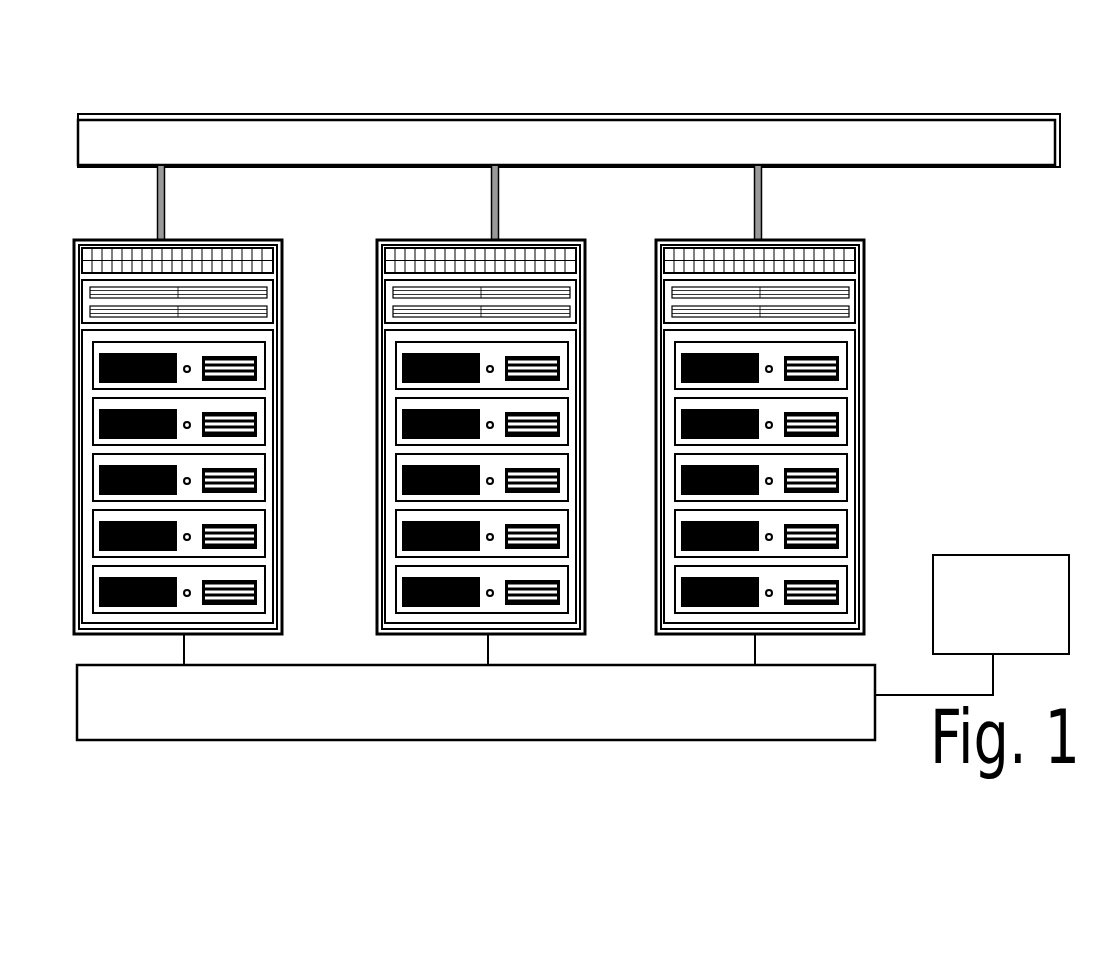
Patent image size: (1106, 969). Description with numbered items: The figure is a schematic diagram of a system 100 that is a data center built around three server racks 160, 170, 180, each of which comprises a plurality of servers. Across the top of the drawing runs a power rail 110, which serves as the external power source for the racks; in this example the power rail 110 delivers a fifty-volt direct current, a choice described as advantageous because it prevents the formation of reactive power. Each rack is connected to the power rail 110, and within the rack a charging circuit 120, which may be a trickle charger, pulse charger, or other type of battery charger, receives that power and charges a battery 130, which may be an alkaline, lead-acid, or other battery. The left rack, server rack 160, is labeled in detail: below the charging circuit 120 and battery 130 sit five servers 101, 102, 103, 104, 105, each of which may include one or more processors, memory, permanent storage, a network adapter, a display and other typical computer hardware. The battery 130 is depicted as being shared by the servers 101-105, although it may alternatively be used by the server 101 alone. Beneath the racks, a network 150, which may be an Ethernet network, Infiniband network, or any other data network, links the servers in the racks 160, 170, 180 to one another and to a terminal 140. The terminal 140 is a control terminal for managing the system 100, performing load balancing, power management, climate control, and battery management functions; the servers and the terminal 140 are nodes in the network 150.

The system 100 is at (1037, 263).
The power rail 110 is at (138, 115).
The charging circuit 120 is at (273, 263).
The battery 130 is at (273, 308).
The server 101 is at (267, 367).
The server 102 is at (267, 425).
The server 103 is at (267, 478).
The server 104 is at (267, 535).
The server 105 is at (267, 593).
The terminal 140 is at (994, 555).
The network 150 is at (457, 740).
The server rack 160 is at (198, 422).
The server rack 170 is at (554, 238).
The server rack 180 is at (825, 240).